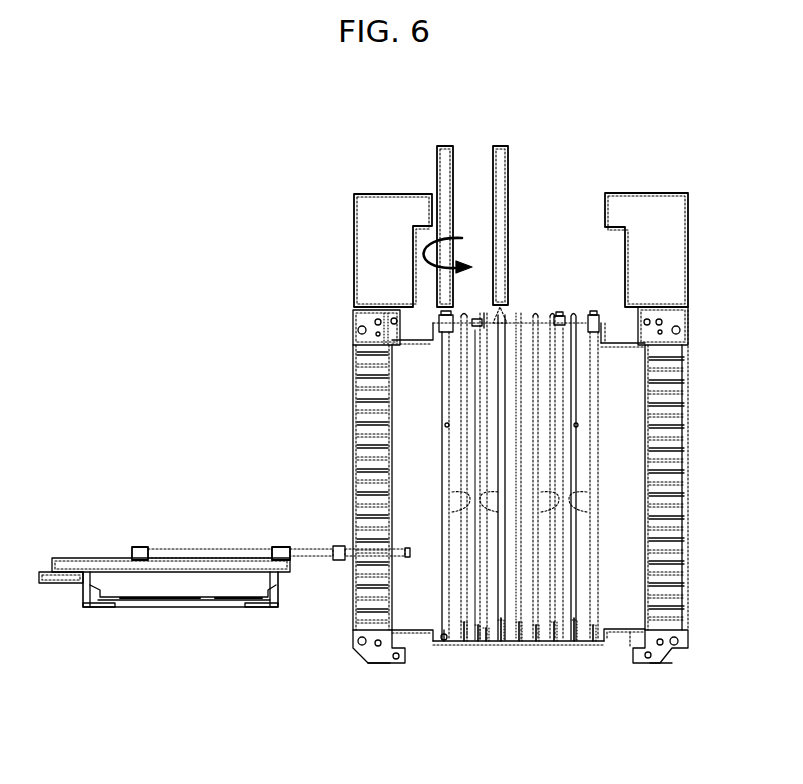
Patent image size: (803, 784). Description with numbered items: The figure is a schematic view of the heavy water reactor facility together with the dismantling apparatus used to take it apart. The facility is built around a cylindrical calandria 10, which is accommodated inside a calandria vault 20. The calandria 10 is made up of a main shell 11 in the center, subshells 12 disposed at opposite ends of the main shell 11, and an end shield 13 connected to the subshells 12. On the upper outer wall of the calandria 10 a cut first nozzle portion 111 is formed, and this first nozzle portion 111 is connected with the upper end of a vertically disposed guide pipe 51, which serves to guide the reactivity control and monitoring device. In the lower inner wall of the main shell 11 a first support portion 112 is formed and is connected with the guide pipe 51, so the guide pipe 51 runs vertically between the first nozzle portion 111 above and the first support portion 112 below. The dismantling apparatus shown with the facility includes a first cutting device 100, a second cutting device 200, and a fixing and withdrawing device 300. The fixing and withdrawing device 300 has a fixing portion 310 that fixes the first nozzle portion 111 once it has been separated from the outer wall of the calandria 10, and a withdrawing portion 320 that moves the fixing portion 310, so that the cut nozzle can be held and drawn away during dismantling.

The calandria 10 is at (529, 536).
The main shell 11 is at (522, 679).
The subshells 12 is at (618, 632).
The end shield 13 is at (684, 622).
The calandria vault 20 is at (645, 193).
The guide pipe 51 is at (442, 400).
The first cutting device 100 is at (455, 157).
The first nozzle portion 111 is at (560, 311).
The first support portion 112 is at (450, 648).
The second cutting device 200 is at (183, 534).
The fixing and withdrawing device 300 is at (546, 393).
The fixing portion 310 is at (505, 316).
The withdrawing portion 320 is at (509, 258).